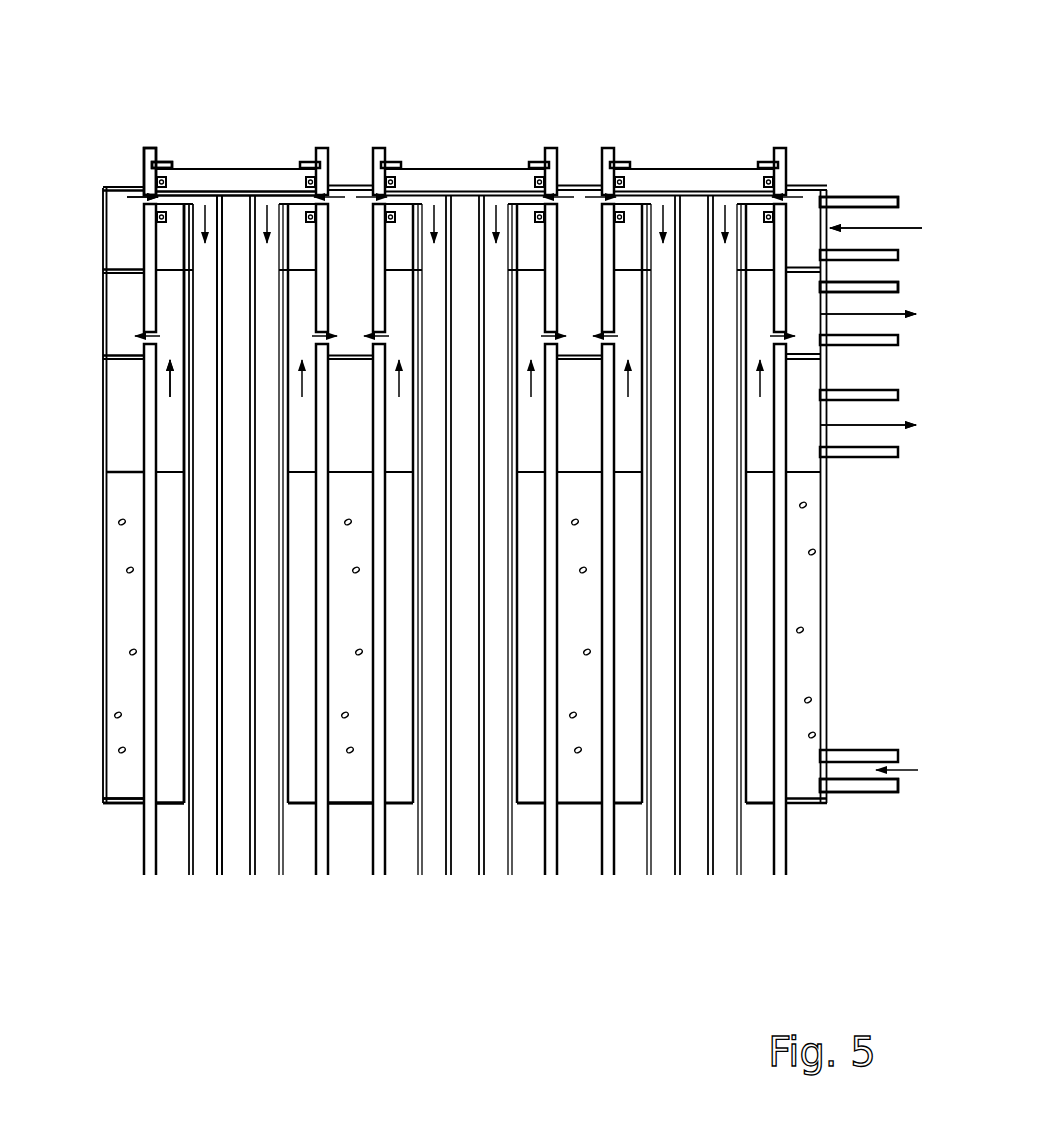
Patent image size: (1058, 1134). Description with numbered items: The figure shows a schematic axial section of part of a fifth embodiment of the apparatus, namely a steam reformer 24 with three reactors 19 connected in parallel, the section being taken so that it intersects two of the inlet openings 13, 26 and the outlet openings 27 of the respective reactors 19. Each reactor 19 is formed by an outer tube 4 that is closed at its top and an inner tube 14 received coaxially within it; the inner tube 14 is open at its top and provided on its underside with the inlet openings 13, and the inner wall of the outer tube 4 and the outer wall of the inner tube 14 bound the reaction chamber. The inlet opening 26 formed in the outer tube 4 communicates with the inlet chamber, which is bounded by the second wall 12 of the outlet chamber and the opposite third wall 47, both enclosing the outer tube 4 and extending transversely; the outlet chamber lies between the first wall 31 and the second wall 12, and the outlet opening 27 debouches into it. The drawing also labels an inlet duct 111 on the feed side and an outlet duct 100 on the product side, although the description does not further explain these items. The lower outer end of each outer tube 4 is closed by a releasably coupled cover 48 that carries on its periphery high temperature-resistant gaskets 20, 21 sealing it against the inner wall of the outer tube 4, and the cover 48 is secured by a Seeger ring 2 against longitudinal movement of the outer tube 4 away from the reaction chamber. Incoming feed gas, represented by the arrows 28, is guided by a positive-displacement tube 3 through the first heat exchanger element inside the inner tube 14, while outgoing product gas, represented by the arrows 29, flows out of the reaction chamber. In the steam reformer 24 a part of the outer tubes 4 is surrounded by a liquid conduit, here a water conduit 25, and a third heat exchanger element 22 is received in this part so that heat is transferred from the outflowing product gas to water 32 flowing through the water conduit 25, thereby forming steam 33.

The reactor 19 is at (216, 70).
The outer tube 4 is at (147, 148).
The Seeger ring 2 is at (162, 162).
The gasket 20 is at (198, 169).
The gasket 21 is at (237, 188).
The inlet opening 13 is at (190, 190).
The cover 48 is at (168, 182).
The third wall 47 is at (142, 187).
The inlet opening 26 is at (144, 188).
The incoming feed gas 28 is at (135, 198).
The inlet duct 111 is at (125, 270).
The outlet duct 100 is at (127, 337).
The outlet opening 27 is at (130, 357).
The water conduit 25 is at (128, 360).
The water 32 is at (125, 800).
The first wall 31 is at (128, 806).
The second wall 12 is at (128, 272).
The outgoing product gas 29 is at (155, 336).
The steam 33 is at (910, 425).
The inner tube 14 is at (190, 877).
The positive-displacement tube 3 is at (222, 877).
The third heat exchanger element 22 is at (170, 877).
The steam reformer 24 is at (120, 995).